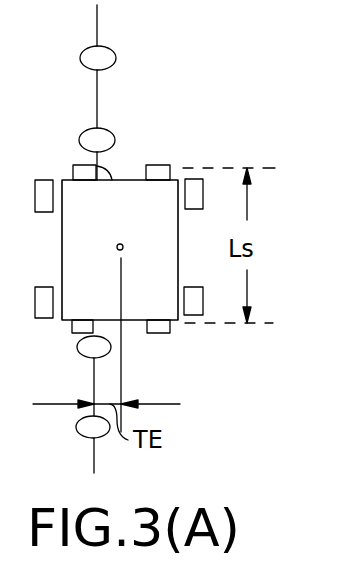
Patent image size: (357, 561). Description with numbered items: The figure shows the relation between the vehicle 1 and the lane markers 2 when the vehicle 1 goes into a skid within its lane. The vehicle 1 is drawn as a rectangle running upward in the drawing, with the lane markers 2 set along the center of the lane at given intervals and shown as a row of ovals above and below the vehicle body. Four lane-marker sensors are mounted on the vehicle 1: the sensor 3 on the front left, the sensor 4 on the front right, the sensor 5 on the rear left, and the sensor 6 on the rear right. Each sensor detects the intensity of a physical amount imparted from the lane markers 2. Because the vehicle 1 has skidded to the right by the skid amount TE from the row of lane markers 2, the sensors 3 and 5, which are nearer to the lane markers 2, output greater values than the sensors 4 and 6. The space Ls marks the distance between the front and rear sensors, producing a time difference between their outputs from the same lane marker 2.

The vehicle 1 is at (157, 247).
The lane markers 2 is at (106, 57).
The lane-marker-sensor 3 is at (73, 166).
The lane-marker-sensor 4 is at (163, 165).
The lane-marker-sensor 5 is at (72, 332).
The lane-marker-sensor 6 is at (165, 333).